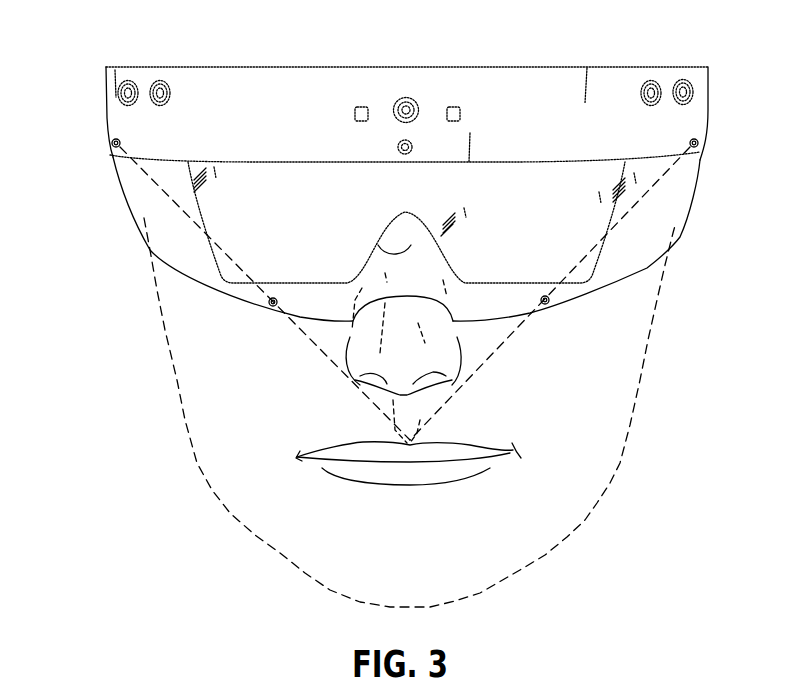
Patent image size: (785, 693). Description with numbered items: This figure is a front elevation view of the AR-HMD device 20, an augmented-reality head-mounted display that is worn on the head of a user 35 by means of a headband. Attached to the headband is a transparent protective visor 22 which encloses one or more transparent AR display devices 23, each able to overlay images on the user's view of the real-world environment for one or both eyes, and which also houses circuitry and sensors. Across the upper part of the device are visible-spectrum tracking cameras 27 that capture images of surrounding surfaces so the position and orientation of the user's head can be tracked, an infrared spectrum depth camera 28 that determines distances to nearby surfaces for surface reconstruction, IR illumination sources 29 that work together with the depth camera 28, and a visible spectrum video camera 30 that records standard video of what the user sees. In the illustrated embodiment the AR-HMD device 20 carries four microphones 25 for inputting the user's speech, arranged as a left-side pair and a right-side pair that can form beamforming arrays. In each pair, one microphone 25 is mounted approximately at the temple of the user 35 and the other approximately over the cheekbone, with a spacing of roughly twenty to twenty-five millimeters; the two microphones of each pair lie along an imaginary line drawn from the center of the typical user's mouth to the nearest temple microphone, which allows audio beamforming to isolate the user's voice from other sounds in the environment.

The AR-HMD device 20 is at (71, 52).
The transparent protective visor 22 is at (647, 268).
The transparent AR display device 23 is at (396, 254).
The microphones 25 is at (112, 141).
The visible-spectrum tracking cameras 27 is at (128, 80).
The infrared spectrum depth camera 28 is at (407, 98).
The IR illumination sources 29 is at (363, 107).
The visible spectrum video camera 30 is at (411, 151).
The user 35 is at (621, 461).